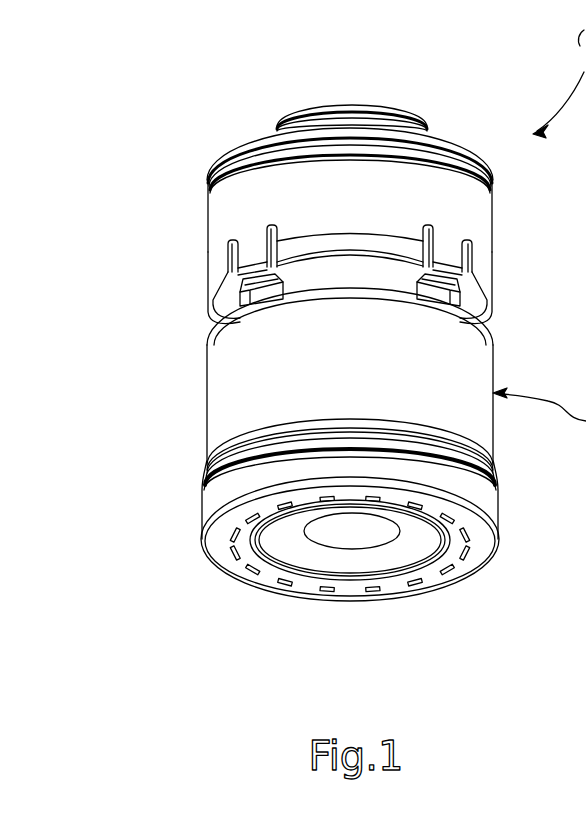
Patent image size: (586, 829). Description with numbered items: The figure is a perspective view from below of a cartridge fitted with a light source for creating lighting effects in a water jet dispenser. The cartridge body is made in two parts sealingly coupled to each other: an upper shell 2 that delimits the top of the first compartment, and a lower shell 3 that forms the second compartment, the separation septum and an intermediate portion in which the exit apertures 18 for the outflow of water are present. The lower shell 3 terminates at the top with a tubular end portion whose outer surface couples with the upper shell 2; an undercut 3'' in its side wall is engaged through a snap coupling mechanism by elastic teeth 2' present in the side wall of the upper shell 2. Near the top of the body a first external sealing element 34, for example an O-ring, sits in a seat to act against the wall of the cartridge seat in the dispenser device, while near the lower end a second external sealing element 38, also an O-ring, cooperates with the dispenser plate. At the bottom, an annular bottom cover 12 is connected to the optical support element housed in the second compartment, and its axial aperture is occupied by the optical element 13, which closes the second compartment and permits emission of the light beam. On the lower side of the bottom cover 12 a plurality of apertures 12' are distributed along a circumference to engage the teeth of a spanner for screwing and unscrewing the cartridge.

The upper shell 2 is at (305, 190).
The elastic teeth 2' is at (287, 274).
The lower shell 3 is at (306, 413).
The undercut 3'' is at (346, 156).
The bottom cover 12 is at (384, 593).
The apertures 12' is at (294, 582).
The optical element 13 is at (290, 545).
The exit apertures 18 is at (215, 300).
The first external sealing element 34 is at (437, 157).
The second external sealing element 38 is at (205, 493).